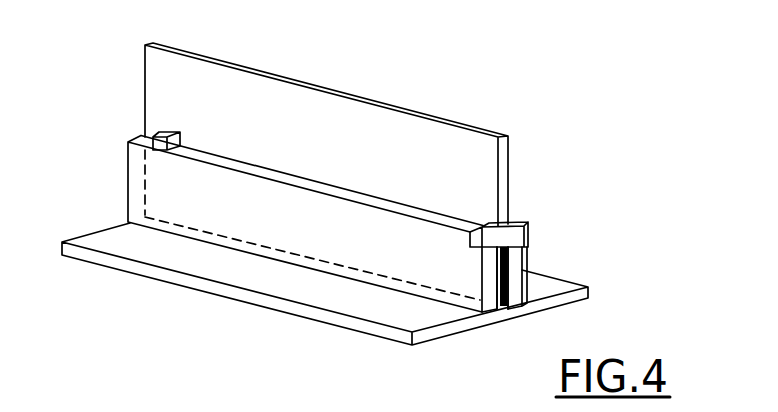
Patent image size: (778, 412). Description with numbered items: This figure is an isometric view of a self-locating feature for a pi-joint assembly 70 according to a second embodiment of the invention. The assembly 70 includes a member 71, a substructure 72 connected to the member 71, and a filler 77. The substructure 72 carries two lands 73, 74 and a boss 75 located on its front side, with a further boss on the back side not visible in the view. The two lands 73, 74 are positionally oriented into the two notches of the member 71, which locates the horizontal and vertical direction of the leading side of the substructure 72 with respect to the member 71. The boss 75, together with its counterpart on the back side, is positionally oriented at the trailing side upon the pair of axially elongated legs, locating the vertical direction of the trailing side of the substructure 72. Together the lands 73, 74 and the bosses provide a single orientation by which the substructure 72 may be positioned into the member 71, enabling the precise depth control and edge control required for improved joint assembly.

The pi-joint assembly 70 is at (316, 197).
The member 71 is at (297, 292).
The substructure 72 is at (303, 98).
The land 73 is at (489, 237).
The land 74 is at (514, 229).
The boss 75 is at (168, 133).
The filler 77 is at (511, 260).